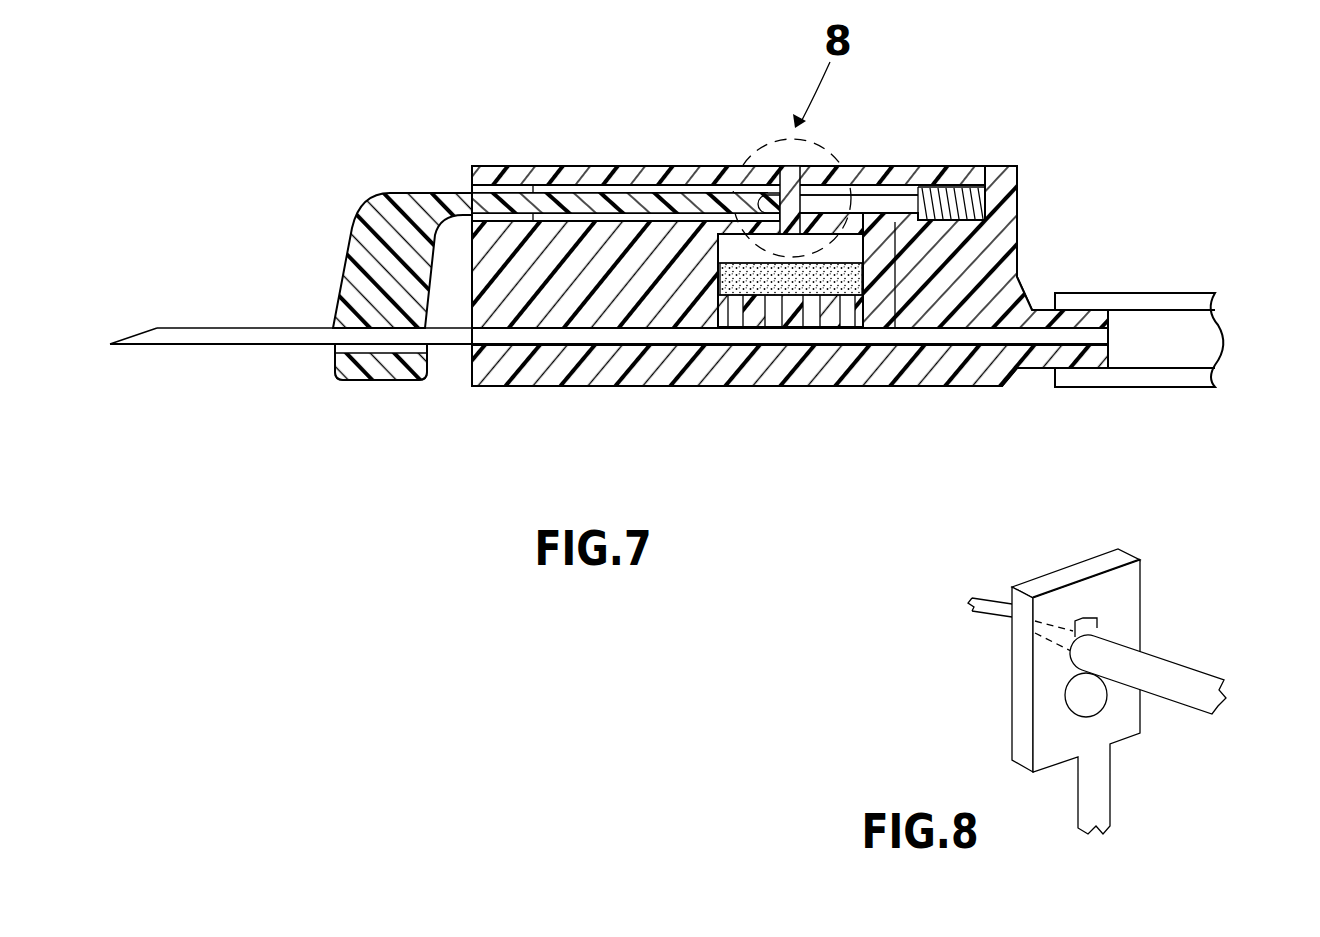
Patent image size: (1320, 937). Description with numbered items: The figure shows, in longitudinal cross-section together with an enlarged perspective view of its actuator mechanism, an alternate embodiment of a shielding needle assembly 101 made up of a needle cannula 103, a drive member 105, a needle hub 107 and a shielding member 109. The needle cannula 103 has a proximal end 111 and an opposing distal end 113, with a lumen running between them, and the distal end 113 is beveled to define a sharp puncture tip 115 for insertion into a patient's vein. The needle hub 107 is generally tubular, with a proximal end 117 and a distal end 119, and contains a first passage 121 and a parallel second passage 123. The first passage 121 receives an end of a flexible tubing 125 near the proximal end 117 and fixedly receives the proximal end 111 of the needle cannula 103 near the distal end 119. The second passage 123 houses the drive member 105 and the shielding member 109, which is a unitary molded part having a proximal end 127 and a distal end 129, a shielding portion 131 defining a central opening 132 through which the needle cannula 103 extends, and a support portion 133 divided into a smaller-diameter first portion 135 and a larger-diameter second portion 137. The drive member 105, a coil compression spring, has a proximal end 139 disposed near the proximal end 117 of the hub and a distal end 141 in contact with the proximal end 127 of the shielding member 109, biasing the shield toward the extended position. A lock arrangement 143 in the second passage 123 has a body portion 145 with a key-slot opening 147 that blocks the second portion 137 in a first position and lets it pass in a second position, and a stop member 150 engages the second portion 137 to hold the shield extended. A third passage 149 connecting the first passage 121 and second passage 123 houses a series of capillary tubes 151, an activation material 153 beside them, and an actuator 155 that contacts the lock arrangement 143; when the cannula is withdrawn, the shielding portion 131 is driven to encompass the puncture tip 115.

In FIG. 7, the shielding needle assembly 101 is at (360, 150).
In FIG. 7, the needle cannula 103 is at (257, 347).
In FIG. 7, the drive member 105 is at (968, 207).
In FIG. 7, the needle hub 107 is at (962, 350).
In FIG. 7, the shielding member 109 is at (460, 192).
In FIG. 7, the proximal end 111 is at (687, 330).
In FIG. 7, the distal end 113 is at (133, 347).
In FIG. 7, the puncture tip 115 is at (137, 325).
In FIG. 7, the proximal end 117 is at (1020, 211).
In FIG. 7, the distal end 119 is at (465, 380).
In FIG. 7, the first passage 121 is at (740, 337).
In FIG. 7, the second passage 123 is at (644, 170).
In FIG. 7, the flexible tubing 125 is at (1193, 293).
In FIG. 7, the proximal end 127 is at (898, 330).
In FIG. 7, the distal end 129 is at (336, 303).
In FIG. 7, the shielding portion 131 is at (370, 245).
In FIG. 7, the central opening 132 is at (333, 352).
In FIG. 7, the support portion 133 is at (739, 180).
In FIG. 7, the first portion 135 is at (700, 207).
In FIG. 8, the first portion 135 is at (992, 597).
In FIG. 7, the second portion 137 is at (855, 202).
In FIG. 8, the second portion 137 is at (1130, 655).
In FIG. 7, the proximal end 139 is at (1018, 215).
In FIG. 7, the distal end 141 is at (905, 200).
In FIG. 8, the lock arrangement 143 is at (1139, 562).
In FIG. 8, the body portion 145 is at (1120, 718).
In FIG. 8, the opening 147 is at (1080, 696).
In FIG. 7, the third passage 149 is at (850, 302).
In FIG. 7, the stop member 150 is at (537, 193).
In FIG. 7, the capillary tubes 151 is at (790, 302).
In FIG. 7, the activation material 153 is at (713, 247).
In FIG. 7, the actuator 155 is at (700, 226).